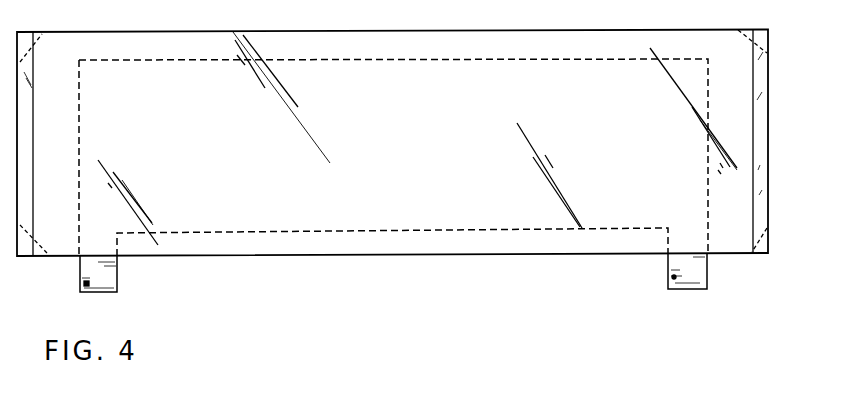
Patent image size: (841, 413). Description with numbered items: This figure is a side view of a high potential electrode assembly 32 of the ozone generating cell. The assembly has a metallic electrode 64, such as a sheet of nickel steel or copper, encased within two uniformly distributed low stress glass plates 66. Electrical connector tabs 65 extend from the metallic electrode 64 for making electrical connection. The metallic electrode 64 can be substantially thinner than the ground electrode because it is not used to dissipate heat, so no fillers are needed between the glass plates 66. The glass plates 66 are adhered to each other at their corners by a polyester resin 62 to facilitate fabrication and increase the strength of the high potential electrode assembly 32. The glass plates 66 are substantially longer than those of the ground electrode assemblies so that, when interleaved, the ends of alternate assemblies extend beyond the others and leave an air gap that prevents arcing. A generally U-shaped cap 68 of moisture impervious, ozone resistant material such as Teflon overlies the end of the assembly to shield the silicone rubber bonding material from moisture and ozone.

The high potential electrode assembly 32 is at (737, 263).
The polyester resin 62 is at (42, 34).
The metallic electrode 64 is at (458, 216).
The electrical connector tabs 65 is at (693, 283).
The glass plates 66 is at (435, 149).
The cap 68 is at (762, 170).